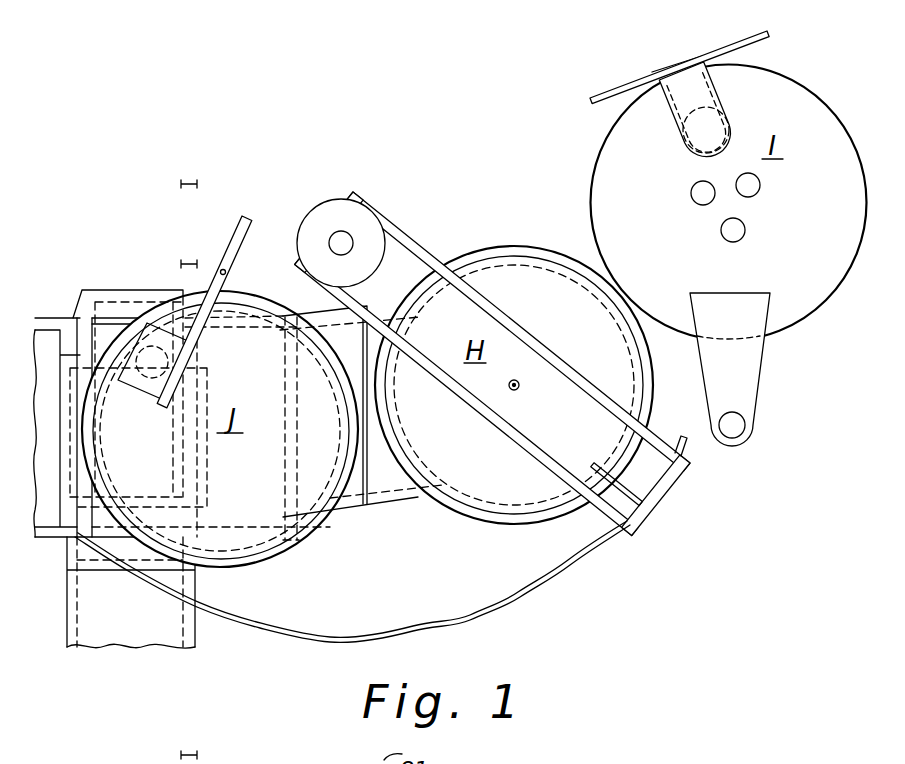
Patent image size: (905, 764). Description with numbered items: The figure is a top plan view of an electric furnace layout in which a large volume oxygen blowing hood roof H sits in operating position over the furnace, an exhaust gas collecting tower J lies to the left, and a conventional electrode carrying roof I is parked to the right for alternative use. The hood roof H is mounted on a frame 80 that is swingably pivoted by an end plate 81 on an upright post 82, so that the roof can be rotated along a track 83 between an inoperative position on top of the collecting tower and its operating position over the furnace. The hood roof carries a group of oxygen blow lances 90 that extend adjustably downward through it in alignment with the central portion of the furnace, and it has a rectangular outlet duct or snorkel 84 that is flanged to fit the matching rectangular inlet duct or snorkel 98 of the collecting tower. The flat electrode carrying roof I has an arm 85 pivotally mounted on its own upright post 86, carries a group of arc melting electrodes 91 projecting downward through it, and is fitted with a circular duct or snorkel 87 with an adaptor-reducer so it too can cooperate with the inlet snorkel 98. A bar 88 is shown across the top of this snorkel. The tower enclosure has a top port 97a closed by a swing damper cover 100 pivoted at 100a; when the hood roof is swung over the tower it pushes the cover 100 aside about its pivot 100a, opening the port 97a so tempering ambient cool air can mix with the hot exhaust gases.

The frame 80 is at (404, 233).
The end plate 81 is at (308, 219).
The upright post 82 is at (339, 231).
The track 83 is at (505, 609).
The outlet duct or snorkel 84 is at (420, 500).
The arm 85 is at (762, 385).
The upright post 86 is at (745, 438).
The circular duct or snorkel 87 is at (666, 108).
The bar 88 is at (614, 89).
The oxygen blow lances 90 is at (519, 391).
The arc melting electrodes 91 is at (760, 187).
The top port 97a is at (170, 375).
The inlet duct or snorkel 98 is at (346, 515).
The swing damper cover 100 is at (150, 397).
The pivot 100a is at (221, 269).